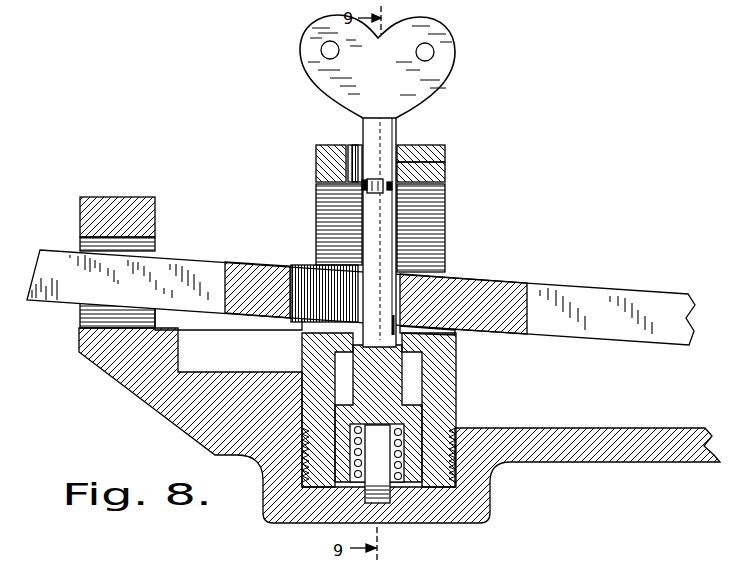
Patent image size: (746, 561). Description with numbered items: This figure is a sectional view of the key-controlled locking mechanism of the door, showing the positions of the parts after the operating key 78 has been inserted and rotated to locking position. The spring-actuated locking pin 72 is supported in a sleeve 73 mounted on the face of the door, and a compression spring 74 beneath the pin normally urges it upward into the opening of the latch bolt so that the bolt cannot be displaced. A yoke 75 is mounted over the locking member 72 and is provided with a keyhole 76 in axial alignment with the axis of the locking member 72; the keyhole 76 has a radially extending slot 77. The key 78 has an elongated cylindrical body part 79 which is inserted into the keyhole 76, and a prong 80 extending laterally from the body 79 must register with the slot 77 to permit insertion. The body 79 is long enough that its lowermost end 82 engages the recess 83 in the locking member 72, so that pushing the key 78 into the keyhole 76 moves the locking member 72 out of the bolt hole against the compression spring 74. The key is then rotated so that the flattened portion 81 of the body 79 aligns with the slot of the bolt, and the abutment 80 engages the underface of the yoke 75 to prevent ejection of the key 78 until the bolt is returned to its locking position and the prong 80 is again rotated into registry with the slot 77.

The locking pin 72 is at (388, 365).
The sleeve 73 is at (452, 388).
The compression spring 74 is at (397, 438).
The yoke 75 is at (432, 174).
The keyhole 76 is at (402, 160).
The radially extending slot 77 is at (352, 162).
The key 78 is at (444, 52).
The cylindrical body part 79 is at (383, 128).
The prong 80 is at (362, 186).
The flattened portion 81 is at (378, 237).
The lowermost end 82 is at (356, 334).
The recess 83 is at (457, 341).